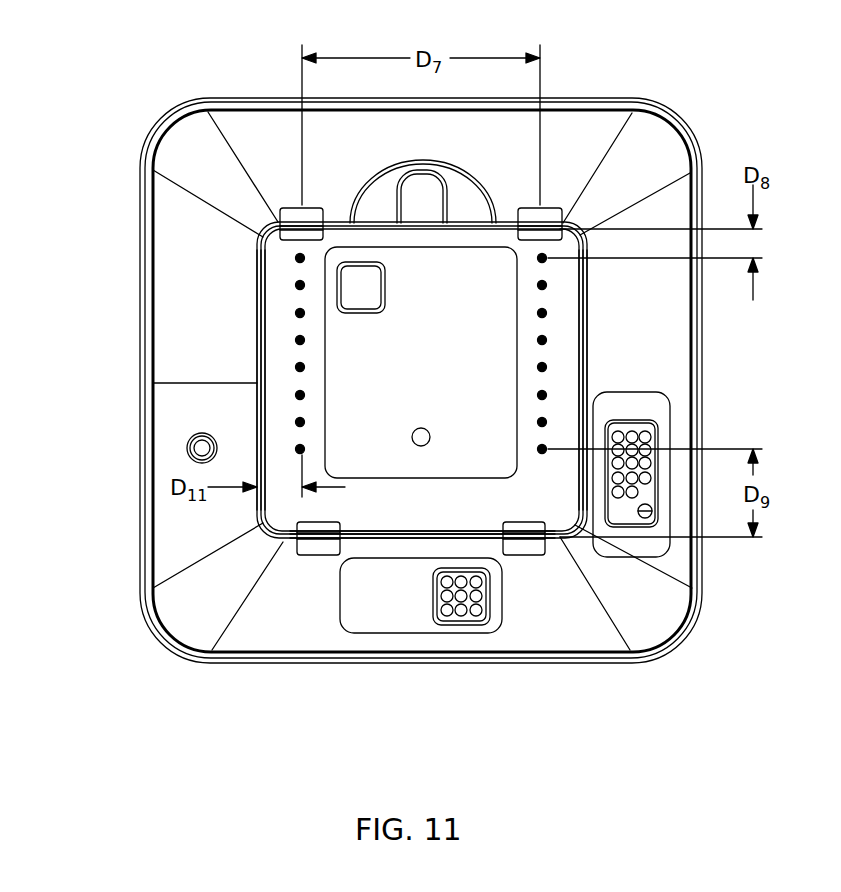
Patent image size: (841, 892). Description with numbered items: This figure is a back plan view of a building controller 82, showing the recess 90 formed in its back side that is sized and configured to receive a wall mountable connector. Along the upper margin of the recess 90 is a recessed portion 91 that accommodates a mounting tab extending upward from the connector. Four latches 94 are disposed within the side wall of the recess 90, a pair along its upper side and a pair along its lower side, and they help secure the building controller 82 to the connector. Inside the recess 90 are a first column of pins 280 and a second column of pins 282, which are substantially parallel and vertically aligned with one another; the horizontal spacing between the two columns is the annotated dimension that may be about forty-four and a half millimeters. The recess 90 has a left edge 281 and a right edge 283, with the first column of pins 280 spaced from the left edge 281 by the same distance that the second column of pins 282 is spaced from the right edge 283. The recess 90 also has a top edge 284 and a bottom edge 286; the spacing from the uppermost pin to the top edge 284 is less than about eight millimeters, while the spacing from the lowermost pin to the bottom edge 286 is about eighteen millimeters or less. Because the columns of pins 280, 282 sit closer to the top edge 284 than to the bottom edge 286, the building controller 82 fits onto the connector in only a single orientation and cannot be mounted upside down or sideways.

The building controller 82 is at (703, 92).
The recess 90 is at (472, 360).
The recessed portion 91 is at (452, 165).
The latches 94 is at (292, 213).
The first column of pins 280 is at (283, 292).
The left edge 281 is at (263, 318).
The second column of pins 282 is at (555, 333).
The right edge 283 is at (577, 395).
The top edge 284 is at (333, 224).
The bottom edge 286 is at (413, 537).